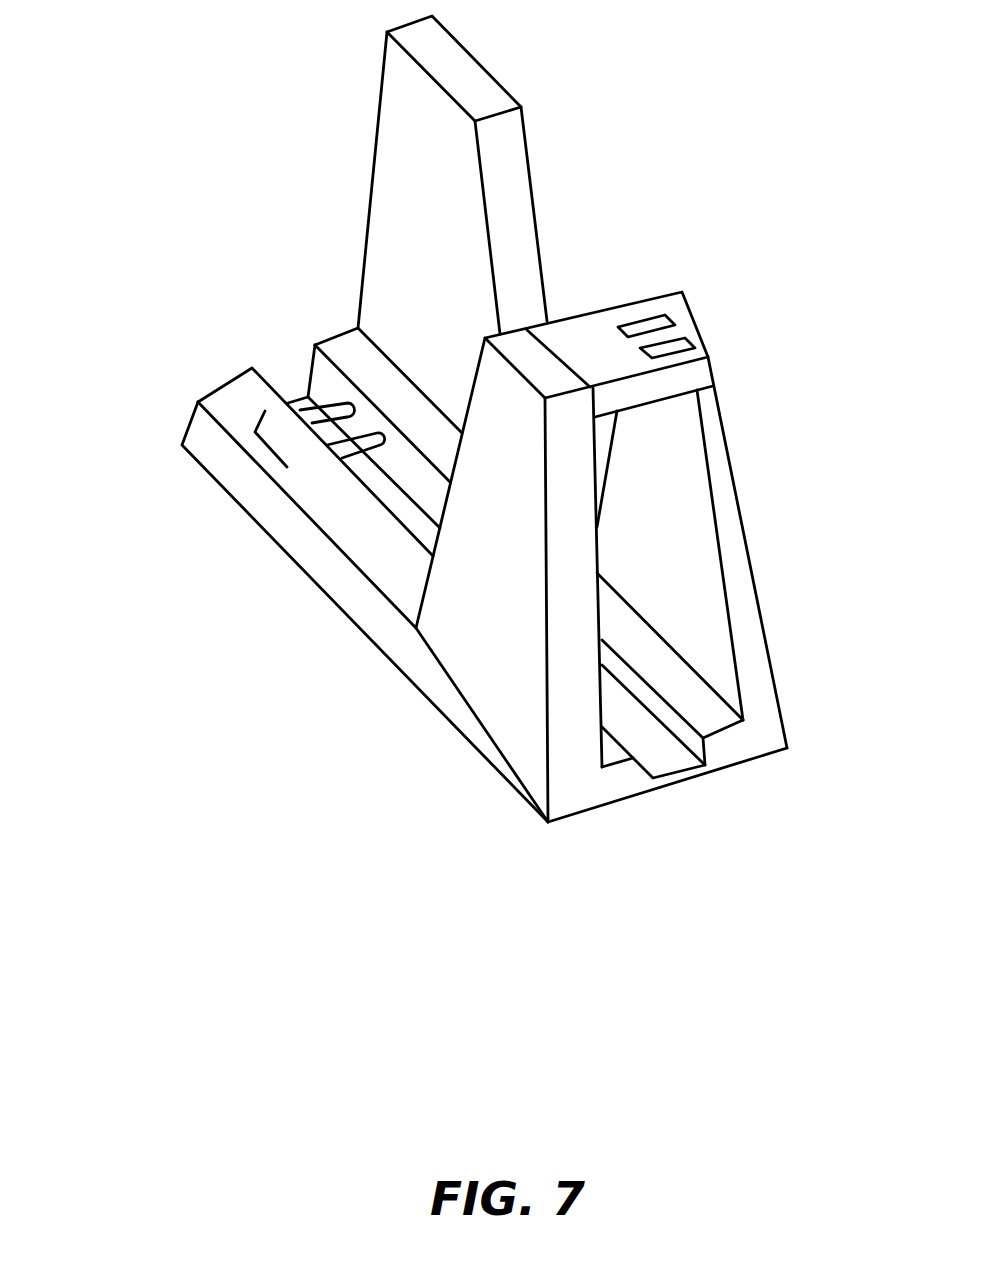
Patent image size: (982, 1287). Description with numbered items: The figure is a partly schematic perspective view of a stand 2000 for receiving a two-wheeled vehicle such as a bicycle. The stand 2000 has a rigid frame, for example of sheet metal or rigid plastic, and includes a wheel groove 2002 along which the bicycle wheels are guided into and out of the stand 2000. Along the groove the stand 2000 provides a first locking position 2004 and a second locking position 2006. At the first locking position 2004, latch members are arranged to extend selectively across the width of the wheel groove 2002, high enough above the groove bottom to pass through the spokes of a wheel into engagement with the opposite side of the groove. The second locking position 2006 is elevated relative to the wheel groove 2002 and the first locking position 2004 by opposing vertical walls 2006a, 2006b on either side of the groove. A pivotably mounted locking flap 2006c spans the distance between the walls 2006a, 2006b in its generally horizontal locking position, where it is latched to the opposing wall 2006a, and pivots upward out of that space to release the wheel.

The stand 2000 is at (451, 462).
The wheel groove 2002 is at (670, 765).
The first locking position 2004 is at (285, 468).
The second locking position 2006 is at (589, 515).
The vertical wall 2006a is at (493, 623).
The vertical wall 2006b is at (764, 625).
The locking flap 2006c is at (591, 345).